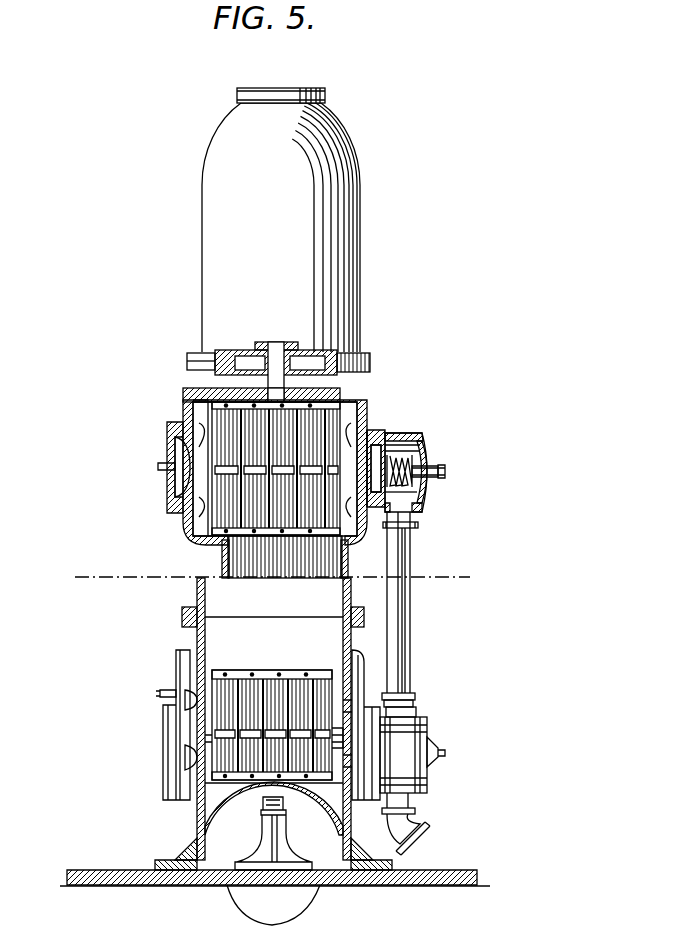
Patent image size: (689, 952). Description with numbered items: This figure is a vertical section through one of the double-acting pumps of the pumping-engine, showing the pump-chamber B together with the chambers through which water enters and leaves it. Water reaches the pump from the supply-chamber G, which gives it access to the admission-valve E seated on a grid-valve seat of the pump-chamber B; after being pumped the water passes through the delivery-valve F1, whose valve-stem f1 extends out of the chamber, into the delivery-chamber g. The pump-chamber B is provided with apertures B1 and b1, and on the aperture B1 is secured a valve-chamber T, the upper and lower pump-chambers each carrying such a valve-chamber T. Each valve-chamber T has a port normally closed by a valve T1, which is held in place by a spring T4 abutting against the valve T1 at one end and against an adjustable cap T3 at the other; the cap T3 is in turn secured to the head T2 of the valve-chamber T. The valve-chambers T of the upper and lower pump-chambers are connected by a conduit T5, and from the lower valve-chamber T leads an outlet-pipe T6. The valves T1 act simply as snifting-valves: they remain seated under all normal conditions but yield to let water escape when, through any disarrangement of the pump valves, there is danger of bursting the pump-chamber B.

The supply-chamber G is at (281, 220).
The pump-chamber B is at (192, 410).
The aperture b1 is at (170, 488).
The admission-valve E is at (240, 503).
The aperture B1 is at (378, 438).
The valve-chamber T is at (418, 417).
The valve T1 is at (393, 440).
The head T2 is at (428, 452).
The adjustable cap T3 is at (432, 493).
The spring T4 is at (433, 470).
The conduit T5 is at (398, 622).
The outlet-pipe T6 is at (420, 833).
The valve-stem f1 is at (412, 714).
The delivery-valve F1 is at (240, 742).
The delivery-chamber g is at (280, 647).